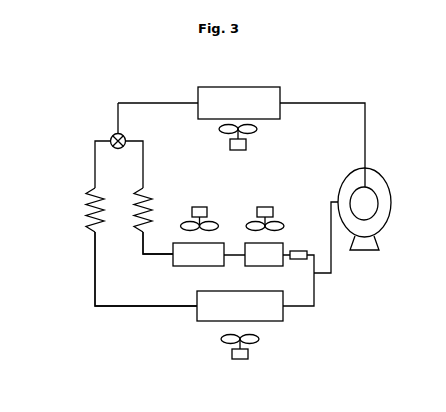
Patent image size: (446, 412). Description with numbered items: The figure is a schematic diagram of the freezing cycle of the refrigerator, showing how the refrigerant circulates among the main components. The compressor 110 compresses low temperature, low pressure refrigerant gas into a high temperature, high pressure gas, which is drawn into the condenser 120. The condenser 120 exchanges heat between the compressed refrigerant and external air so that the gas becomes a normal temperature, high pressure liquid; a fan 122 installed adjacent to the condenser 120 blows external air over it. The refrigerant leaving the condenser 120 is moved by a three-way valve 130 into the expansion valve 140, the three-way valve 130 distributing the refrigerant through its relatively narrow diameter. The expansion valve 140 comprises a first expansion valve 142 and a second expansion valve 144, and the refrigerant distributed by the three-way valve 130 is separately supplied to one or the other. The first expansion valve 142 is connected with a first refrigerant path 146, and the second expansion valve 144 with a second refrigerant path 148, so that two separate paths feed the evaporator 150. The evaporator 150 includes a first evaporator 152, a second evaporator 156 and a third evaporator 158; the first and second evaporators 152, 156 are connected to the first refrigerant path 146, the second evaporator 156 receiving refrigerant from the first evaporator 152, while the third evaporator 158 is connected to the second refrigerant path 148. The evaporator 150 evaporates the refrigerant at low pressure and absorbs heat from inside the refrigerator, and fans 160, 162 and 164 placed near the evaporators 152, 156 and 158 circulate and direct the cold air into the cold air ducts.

The compressor 110 is at (378, 178).
The condenser 120 is at (235, 93).
The fan 122 is at (246, 144).
The 3-way valve 130 is at (116, 133).
The expansion valve 140 is at (91, 195).
The first expansion valve 142 is at (142, 190).
The second expansion valve 144 is at (80, 210).
The first refrigerant path 146 is at (142, 244).
The second refrigerant path 148 is at (94, 290).
The evaporator 150 is at (215, 303).
The first evaporator 152 is at (178, 261).
The second evaporator 156 is at (245, 258).
The third evaporator 158 is at (227, 316).
The fan 160 is at (198, 206).
The fan 162 is at (264, 206).
The fan 164 is at (240, 359).